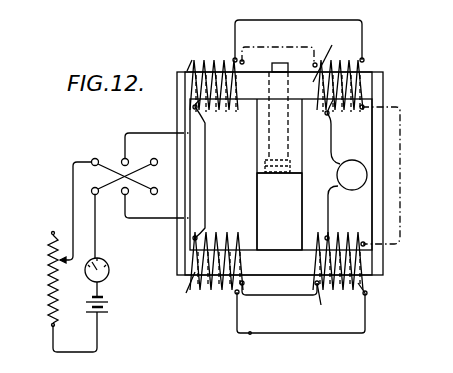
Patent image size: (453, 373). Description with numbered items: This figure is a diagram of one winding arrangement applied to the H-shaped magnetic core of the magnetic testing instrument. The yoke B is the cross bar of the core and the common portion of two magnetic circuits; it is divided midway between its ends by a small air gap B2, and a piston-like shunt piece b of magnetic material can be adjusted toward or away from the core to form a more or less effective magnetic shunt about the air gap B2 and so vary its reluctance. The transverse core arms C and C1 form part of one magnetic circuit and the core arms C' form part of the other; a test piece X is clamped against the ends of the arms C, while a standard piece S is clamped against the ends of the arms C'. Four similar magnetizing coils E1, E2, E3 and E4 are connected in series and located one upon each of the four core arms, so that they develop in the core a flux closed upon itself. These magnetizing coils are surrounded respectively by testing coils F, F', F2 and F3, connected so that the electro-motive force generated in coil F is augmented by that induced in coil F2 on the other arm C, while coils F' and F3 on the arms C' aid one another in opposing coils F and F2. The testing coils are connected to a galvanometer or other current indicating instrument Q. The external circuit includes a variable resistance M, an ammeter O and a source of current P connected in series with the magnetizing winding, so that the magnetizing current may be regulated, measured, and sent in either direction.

The test piece X is at (378, 88).
The standard piece S is at (180, 107).
The yoke B is at (279, 156).
The shunt piece b is at (265, 167).
The air gap B2 is at (257, 175).
The galvanometer Q is at (352, 161).
The magnetizing coil E4 is at (217, 62).
The magnetizing coil E3 is at (363, 60).
The magnetizing coil E2 is at (226, 244).
The magnetizing coil E1 is at (333, 240).
The core arm C' is at (177, 176).
The core arm C1 is at (330, 57).
The core arm C is at (314, 305).
The test coil F3 is at (213, 107).
The test coil F2 is at (340, 108).
The test coil F' is at (292, 312).
The test coil F is at (357, 305).
The variable resistance M is at (48, 279).
The ammeter O is at (109, 266).
The source of current P is at (106, 306).